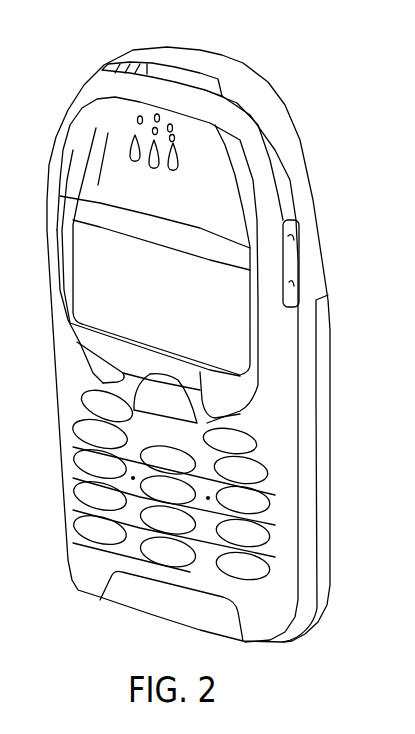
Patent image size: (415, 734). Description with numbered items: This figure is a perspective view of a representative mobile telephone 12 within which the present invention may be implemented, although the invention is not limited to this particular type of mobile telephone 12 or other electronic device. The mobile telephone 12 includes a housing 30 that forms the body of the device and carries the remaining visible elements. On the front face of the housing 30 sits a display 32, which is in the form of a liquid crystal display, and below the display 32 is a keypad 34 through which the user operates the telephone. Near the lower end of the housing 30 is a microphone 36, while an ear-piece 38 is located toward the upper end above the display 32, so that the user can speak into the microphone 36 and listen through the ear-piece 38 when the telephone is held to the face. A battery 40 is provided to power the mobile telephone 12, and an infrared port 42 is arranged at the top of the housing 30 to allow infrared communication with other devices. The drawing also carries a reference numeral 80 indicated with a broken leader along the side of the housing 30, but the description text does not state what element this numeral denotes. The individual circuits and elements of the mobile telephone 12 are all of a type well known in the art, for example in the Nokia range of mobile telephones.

The mobile telephone 12 is at (284, 52).
The housing 30 is at (300, 169).
The display 32 is at (220, 323).
The keypad 34 is at (243, 572).
The microphone 36 is at (123, 598).
The ear-piece 38 is at (133, 134).
The battery 40 is at (332, 557).
The infrared port 42 is at (174, 74).
The hidden component 80 is at (333, 453).